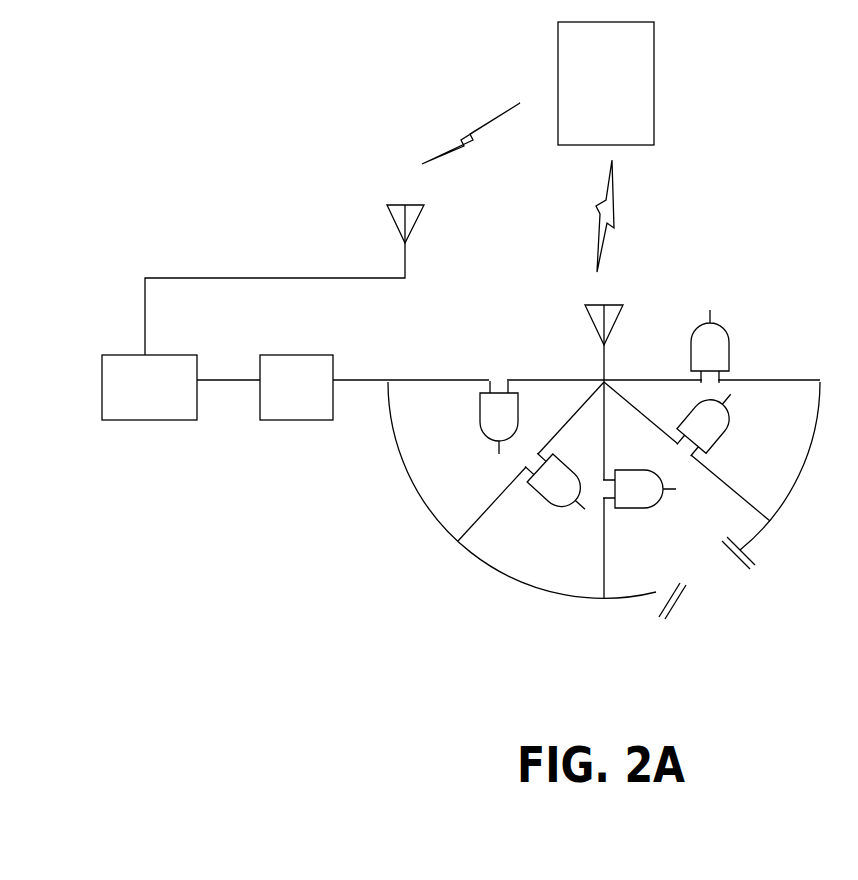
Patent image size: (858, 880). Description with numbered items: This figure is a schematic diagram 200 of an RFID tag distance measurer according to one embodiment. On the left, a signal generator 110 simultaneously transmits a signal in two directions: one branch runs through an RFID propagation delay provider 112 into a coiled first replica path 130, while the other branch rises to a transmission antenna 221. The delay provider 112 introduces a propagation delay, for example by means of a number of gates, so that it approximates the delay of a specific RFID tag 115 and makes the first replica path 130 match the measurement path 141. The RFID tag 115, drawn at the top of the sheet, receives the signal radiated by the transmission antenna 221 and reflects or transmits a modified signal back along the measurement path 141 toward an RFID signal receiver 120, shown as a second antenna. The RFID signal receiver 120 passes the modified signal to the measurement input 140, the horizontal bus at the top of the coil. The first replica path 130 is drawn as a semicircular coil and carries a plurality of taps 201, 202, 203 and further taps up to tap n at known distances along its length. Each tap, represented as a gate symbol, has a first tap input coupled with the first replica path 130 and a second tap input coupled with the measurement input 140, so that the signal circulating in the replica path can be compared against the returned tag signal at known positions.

The schematic diagram 200 is at (382, 64).
The RFID tag 115 is at (626, 124).
The measurement path 141 is at (626, 222).
The transmission antenna 221 is at (395, 229).
The signal generator 110 is at (102, 403).
The RFID propagation delay provider 112 is at (278, 399).
The RFID signal receiver 120 is at (590, 329).
The measurement input 140 is at (657, 380).
The first replica path 130 is at (506, 574).
The tap 201 is at (478, 410).
The tap 202 is at (556, 500).
The tap 203 is at (643, 510).
The tap n is at (722, 441).